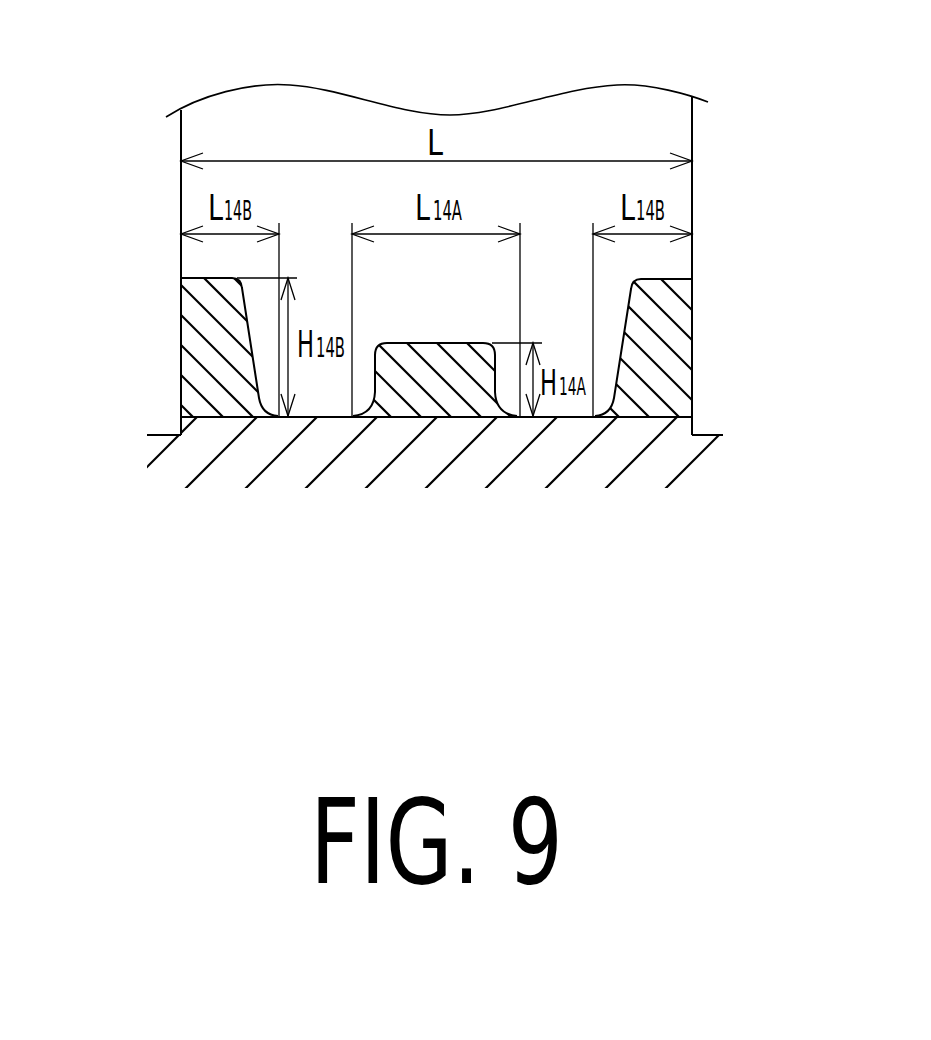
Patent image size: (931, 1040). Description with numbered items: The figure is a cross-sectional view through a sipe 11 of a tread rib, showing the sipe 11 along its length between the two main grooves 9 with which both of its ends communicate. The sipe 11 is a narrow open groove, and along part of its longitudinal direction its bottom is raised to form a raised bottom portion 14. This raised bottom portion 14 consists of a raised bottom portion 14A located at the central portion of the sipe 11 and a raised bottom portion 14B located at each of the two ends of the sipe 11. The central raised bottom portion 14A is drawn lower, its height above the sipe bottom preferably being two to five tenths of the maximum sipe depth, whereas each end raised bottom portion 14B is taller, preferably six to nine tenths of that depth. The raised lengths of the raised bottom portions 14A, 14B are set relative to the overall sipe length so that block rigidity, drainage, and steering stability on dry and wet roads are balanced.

The main groove 9 is at (162, 423).
The sipe 11 is at (571, 325).
The raised bottom portion 14 is at (429, 458).
The raised bottom portion 14A is at (429, 455).
The raised bottom portion 14B is at (230, 382).